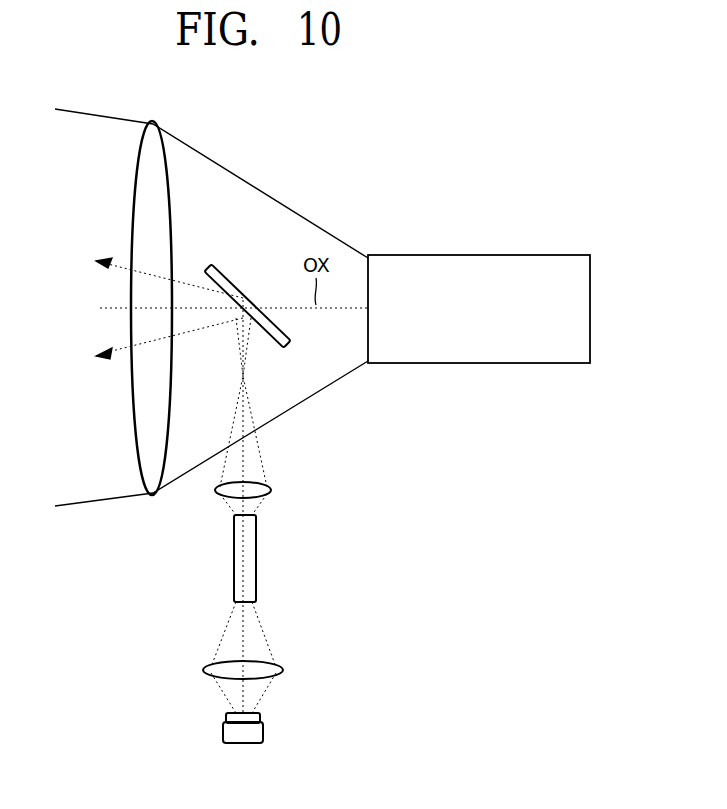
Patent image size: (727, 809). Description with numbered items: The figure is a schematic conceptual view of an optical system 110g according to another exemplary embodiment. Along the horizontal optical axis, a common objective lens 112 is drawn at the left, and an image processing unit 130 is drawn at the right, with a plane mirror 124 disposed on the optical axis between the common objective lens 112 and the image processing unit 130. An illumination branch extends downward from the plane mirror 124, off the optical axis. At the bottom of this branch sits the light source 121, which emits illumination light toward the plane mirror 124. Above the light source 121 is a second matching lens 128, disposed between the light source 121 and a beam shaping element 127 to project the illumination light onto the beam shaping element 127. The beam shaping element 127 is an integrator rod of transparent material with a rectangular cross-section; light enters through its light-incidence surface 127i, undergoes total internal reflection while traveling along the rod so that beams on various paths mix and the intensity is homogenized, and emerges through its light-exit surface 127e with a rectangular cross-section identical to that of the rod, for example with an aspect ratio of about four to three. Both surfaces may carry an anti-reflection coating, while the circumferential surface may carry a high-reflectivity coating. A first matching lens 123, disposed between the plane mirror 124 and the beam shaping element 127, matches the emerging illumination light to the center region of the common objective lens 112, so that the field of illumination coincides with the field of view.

The common objective lens 112 is at (139, 190).
The plane mirror 124 is at (234, 286).
The image processing unit 130 is at (453, 254).
The first matching lens 123 is at (272, 488).
The light-exit surface 127e is at (250, 511).
The beam shaping element 127 is at (256, 559).
The light-incidence surface 127i is at (250, 604).
The second matching lens 128 is at (283, 670).
The light source 121 is at (263, 733).
The optical system 110g is at (125, 536).